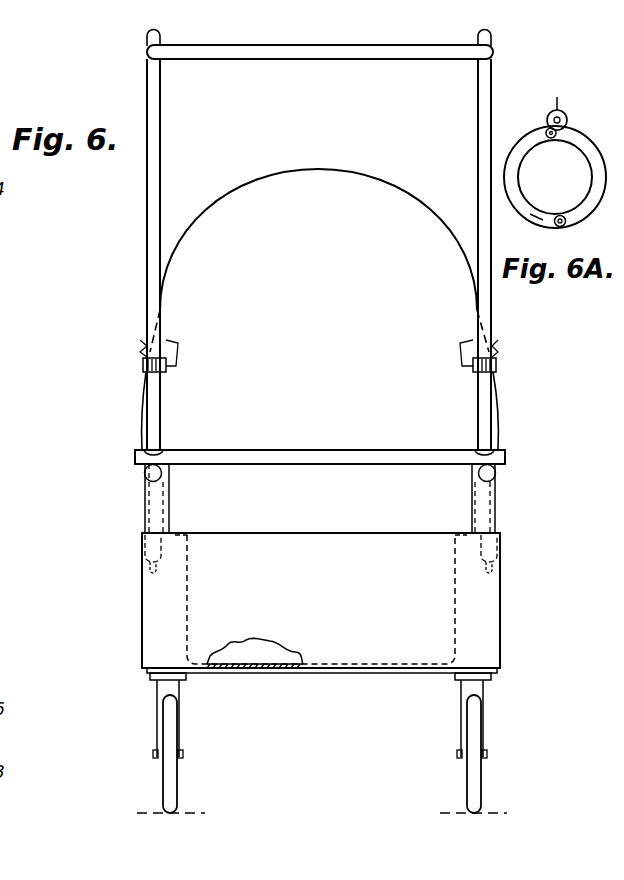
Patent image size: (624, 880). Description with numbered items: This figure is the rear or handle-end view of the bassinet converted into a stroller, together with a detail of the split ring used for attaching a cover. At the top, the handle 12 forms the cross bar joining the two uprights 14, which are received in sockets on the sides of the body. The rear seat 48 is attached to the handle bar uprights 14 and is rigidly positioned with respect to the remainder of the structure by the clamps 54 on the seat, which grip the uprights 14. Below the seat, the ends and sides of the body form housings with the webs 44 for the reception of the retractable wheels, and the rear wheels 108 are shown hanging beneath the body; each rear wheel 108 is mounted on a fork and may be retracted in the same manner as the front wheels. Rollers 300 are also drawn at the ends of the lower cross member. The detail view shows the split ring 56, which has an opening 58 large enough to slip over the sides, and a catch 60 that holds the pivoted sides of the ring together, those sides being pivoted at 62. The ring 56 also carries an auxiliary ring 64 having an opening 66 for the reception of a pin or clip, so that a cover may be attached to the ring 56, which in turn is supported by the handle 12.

In FIG. 6, the handle 12 is at (337, 61).
In FIG. 6, the uprights 14 is at (161, 170).
In FIG. 6, the seat 48 is at (328, 262).
In FIG. 6, the clamps 54 is at (143, 371).
In FIG. 6, the rollers 300 is at (496, 476).
In FIG. 6, the webs 44 is at (187, 604).
In FIG. 6, the rear wheels 108 is at (481, 791).
In FIG. 6A, the split ring 56 is at (589, 156).
In FIG. 6A, the opening 58 is at (526, 216).
In FIG. 6A, the catch 60 is at (557, 130).
In FIG. 6A, the pivot 62 is at (566, 223).
In FIG. 6A, the auxiliary ring 64 is at (547, 121).
In FIG. 6A, the opening 66 is at (556, 94).